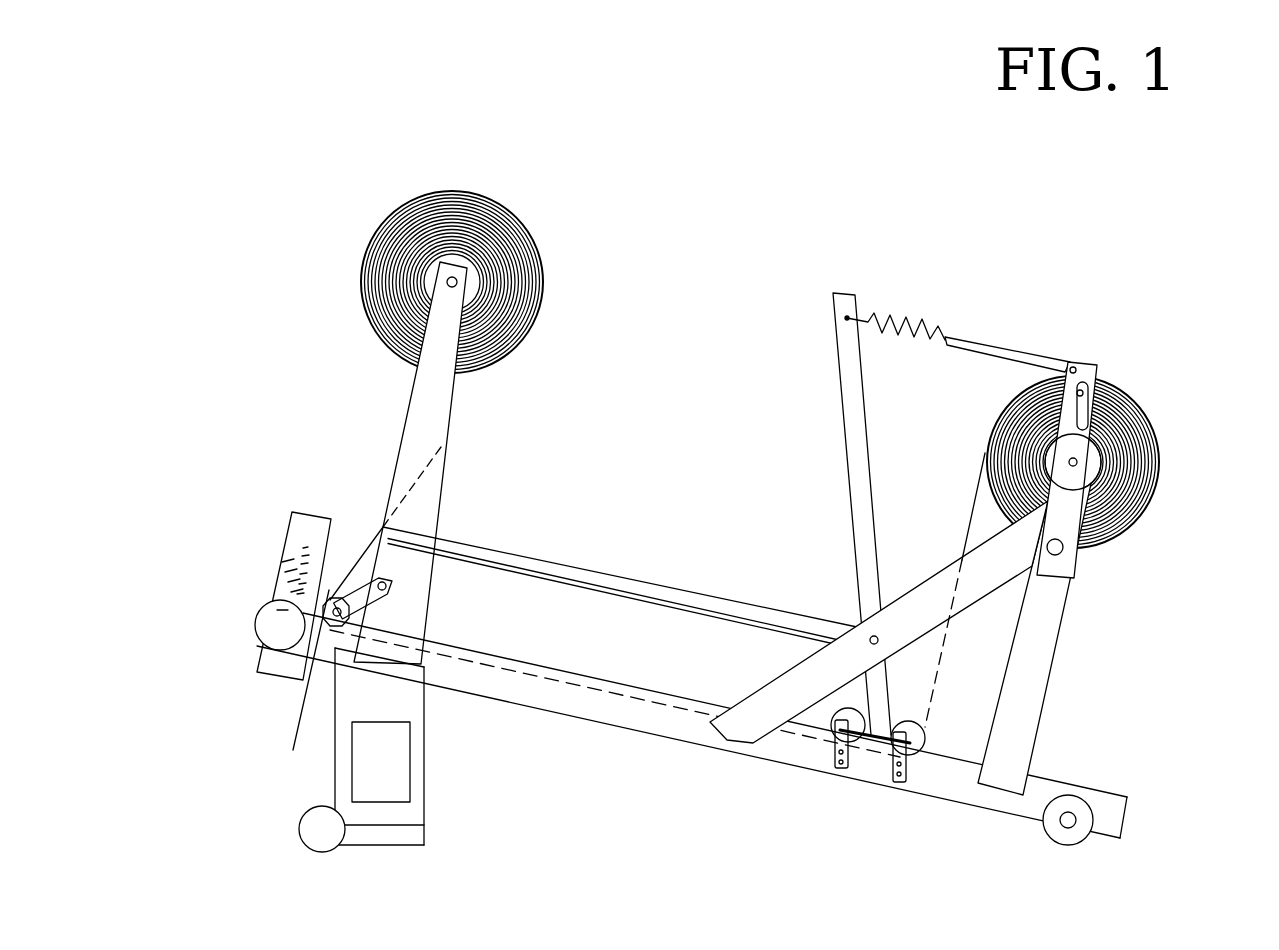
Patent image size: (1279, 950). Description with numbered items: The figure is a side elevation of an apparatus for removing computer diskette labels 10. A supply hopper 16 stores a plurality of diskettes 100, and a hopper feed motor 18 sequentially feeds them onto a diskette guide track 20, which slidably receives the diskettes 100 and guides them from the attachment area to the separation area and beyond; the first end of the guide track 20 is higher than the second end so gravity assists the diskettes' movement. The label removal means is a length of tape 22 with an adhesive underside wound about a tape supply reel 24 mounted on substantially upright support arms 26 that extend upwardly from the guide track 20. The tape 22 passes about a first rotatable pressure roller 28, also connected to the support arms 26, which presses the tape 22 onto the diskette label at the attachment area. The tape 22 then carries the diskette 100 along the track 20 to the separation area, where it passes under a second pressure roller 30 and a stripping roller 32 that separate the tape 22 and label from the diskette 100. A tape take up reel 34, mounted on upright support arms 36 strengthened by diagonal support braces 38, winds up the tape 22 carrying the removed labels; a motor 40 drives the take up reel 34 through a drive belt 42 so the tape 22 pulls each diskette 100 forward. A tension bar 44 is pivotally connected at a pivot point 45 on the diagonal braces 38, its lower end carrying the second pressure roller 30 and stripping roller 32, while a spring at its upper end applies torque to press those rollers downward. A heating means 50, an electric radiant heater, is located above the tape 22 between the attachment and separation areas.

The apparatus for removing computer diskette labels 10 is at (958, 286).
The supply hopper 16 is at (189, 569).
The hopper feed motor 18 is at (167, 643).
The diskette guide track 20 is at (692, 722).
The length of tape 22 is at (245, 476).
The tape supply reel 24 is at (502, 247).
The support arms 26 is at (255, 455).
The first rotatable pressure roller 28 is at (179, 682).
The second pressure roller 30 is at (834, 772).
The stripping roller 32 is at (944, 787).
The tape take up reel 34 is at (1130, 418).
The support arms 36 is at (1128, 632).
The diagonal support braces 38 is at (994, 645).
The motor 40 is at (1158, 508).
The drive belt 42 is at (1158, 562).
The tension bar 44 is at (839, 480).
The pivot point 45 is at (1074, 741).
The heating means 50 is at (619, 404).
The diskettes 100 is at (169, 570).